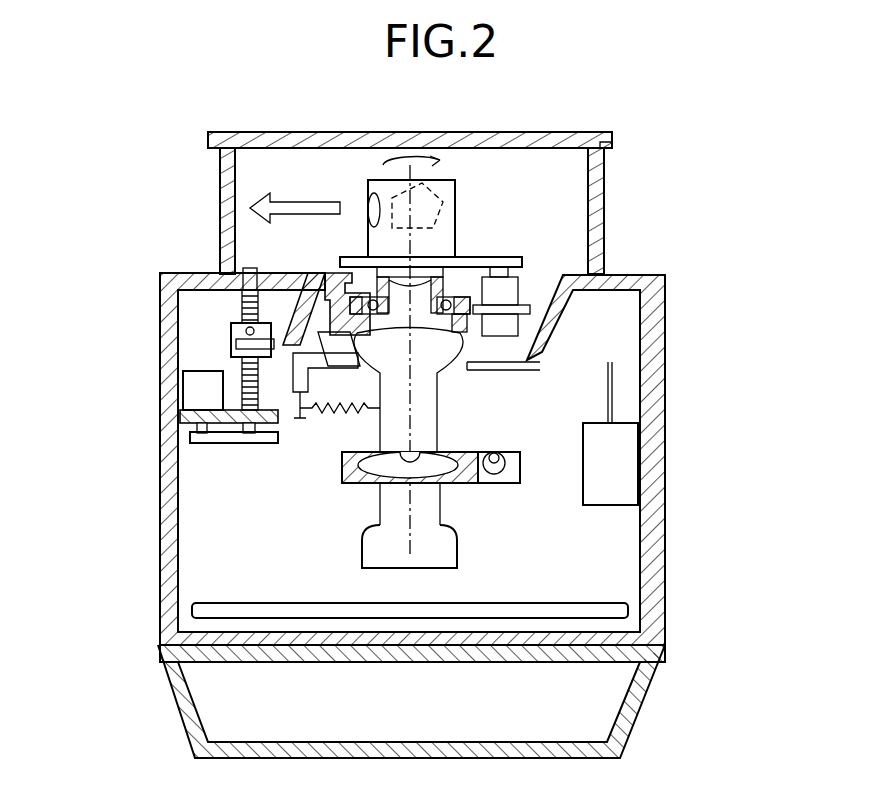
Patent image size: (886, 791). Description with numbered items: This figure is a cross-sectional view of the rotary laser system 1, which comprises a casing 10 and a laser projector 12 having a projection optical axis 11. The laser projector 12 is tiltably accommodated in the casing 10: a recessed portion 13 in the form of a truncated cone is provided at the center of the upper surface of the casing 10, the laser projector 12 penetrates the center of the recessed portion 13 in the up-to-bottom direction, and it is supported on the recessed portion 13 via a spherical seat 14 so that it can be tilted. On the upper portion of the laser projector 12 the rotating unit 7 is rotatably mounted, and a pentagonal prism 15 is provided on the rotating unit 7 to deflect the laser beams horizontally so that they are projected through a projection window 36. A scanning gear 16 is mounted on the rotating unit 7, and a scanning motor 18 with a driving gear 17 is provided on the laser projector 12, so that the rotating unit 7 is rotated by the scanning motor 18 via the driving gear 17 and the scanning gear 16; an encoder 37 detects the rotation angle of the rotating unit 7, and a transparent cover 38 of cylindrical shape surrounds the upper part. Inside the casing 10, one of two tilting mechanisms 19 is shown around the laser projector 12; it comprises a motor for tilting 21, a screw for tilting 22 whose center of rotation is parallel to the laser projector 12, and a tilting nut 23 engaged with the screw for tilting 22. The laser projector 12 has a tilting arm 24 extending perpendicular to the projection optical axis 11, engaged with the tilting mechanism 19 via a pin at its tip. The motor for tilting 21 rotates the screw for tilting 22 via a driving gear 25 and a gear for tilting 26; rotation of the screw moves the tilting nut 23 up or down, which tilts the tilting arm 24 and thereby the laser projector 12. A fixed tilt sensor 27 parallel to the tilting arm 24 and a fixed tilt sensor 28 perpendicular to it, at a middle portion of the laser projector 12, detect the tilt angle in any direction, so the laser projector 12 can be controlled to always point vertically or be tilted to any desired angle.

The rotary laser system 1 is at (737, 116).
The rotating unit 7 is at (460, 197).
The casing 10 is at (637, 273).
The projection optical axis 11 is at (380, 430).
The laser projector 12 is at (453, 397).
The recessed portion 13 is at (587, 350).
The spherical seat 14 is at (467, 370).
The pentagonal prism 15 is at (396, 130).
The scanning gear 16 is at (465, 260).
The driving gear 17 is at (498, 262).
The scanning motor 18 is at (500, 293).
The tilting mechanism 19 is at (212, 345).
The motor for tilting 21 is at (197, 385).
The screw for tilting 22 is at (243, 300).
The tilting nut 23 is at (240, 323).
The tilting arm 24 is at (290, 300).
The driving gear 25 is at (190, 438).
The gear for tilting 26 is at (247, 443).
The fixed tilt sensor 27 is at (450, 483).
The fixed tilt sensor 28 is at (510, 483).
The projection window 36 is at (368, 207).
The encoder 37 is at (328, 275).
The transparent cover 38 is at (220, 170).